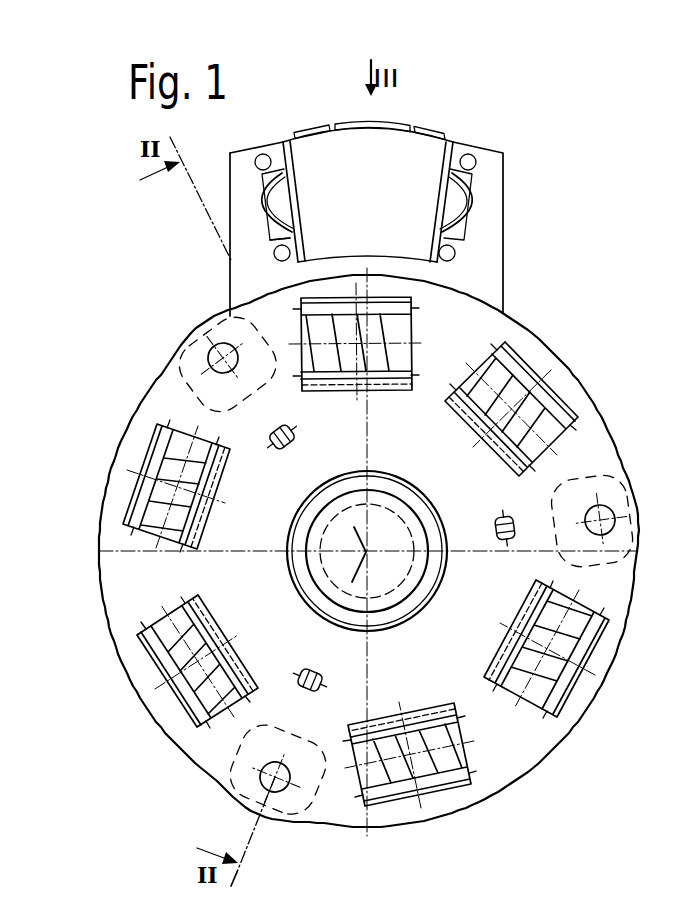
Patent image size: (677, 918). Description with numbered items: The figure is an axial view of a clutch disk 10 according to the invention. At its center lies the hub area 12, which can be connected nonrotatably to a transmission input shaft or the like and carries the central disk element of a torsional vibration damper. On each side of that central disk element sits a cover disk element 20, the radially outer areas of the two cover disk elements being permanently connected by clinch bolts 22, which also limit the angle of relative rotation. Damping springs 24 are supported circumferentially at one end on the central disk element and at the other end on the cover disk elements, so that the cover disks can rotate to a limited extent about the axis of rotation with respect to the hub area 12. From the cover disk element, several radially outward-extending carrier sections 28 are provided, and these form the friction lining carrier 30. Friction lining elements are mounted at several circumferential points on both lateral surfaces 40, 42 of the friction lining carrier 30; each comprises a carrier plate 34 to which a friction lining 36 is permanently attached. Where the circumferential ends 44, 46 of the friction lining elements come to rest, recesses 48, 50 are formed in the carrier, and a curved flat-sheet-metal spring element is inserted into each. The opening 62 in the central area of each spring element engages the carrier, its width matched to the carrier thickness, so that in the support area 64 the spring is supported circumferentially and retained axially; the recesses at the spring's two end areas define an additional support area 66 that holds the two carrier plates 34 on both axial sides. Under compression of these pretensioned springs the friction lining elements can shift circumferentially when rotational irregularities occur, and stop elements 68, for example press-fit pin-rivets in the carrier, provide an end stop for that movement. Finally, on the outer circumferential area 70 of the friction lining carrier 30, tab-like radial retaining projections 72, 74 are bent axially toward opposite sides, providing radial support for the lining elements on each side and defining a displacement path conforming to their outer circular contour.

The clutch disk 10 is at (124, 336).
The hub area 12 is at (285, 560).
The cover disk element 20 is at (398, 545).
The clinch bolts 22 is at (613, 515).
The damping springs 24 is at (578, 650).
The carrier section 28 is at (359, 229).
The friction lining carrier 30 is at (377, 229).
The carrier plate 34 is at (228, 313).
The friction lining 36 is at (385, 144).
The lateral surface 40 is at (676, 352).
The lateral surface 42 is at (670, 402).
The circumferential end 44 is at (287, 175).
The circumferential end 46 is at (476, 160).
The recess 48 is at (268, 185).
The recess 50 is at (490, 192).
The opening 62 is at (263, 198).
The support area 64 is at (262, 205).
The additional support area 66 is at (293, 188).
The stop elements 68 is at (263, 153).
The outer circumferential area 70 is at (452, 152).
The radial retaining projections 72 is at (345, 128).
The radial retaining projections 74 is at (317, 128).